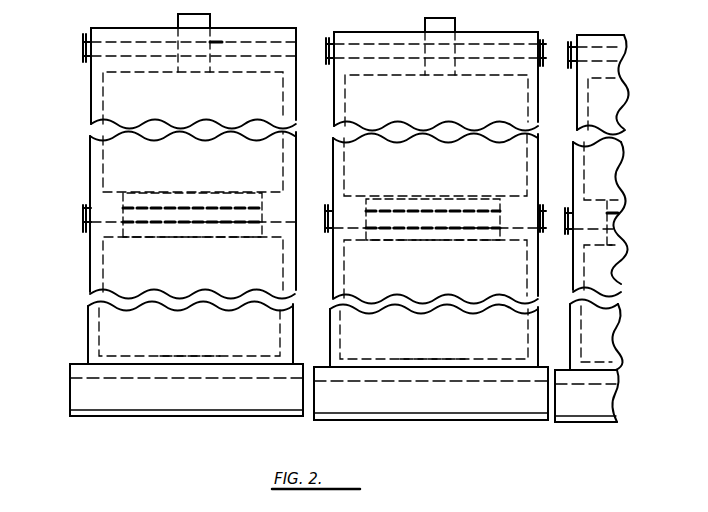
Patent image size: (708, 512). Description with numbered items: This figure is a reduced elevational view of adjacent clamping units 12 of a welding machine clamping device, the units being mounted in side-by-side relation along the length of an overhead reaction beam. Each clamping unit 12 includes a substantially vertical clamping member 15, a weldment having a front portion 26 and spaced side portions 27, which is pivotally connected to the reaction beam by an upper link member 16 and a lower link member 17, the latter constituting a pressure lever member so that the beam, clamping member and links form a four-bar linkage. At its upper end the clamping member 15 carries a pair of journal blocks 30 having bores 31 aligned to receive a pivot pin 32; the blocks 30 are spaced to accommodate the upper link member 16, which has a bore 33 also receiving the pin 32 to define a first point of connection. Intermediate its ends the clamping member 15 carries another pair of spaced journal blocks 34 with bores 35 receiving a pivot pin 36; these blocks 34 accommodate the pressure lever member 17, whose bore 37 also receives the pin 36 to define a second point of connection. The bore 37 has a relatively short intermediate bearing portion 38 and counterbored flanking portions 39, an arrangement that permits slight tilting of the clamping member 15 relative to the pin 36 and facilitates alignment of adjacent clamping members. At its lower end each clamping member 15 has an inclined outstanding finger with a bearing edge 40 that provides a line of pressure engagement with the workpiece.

The clamping unit 12 is at (91, 154).
The clamping member 15 is at (88, 283).
The upper link member 16 is at (182, 20).
The lower link member 17 is at (168, 193).
The front portion 26 is at (315, 341).
The side portions 27 is at (99, 333).
The journal blocks 30 is at (121, 72).
The bores 31 is at (156, 43).
The pivot pin 32 is at (83, 52).
The bore 33 is at (216, 42).
The journal blocks 34 is at (116, 238).
The bores 35 is at (116, 208).
The pivot pin 36 is at (82, 217).
The bore 37 is at (138, 202).
The intermediate bearing portion 38 is at (189, 225).
The counterbored flanking portions 39 is at (151, 222).
The bearing edge 40 is at (161, 418).